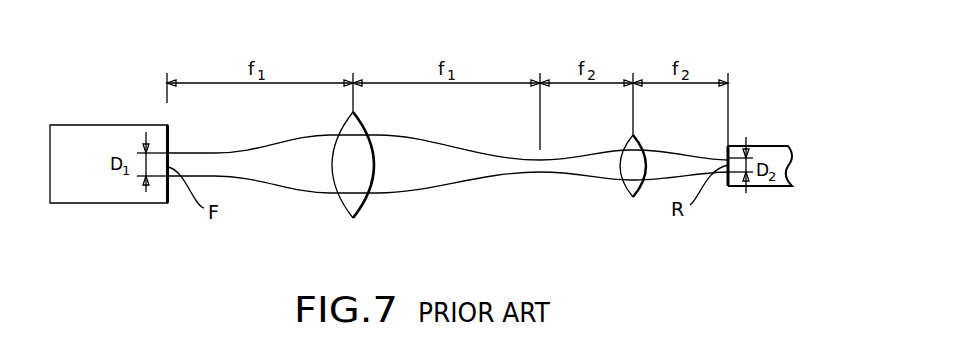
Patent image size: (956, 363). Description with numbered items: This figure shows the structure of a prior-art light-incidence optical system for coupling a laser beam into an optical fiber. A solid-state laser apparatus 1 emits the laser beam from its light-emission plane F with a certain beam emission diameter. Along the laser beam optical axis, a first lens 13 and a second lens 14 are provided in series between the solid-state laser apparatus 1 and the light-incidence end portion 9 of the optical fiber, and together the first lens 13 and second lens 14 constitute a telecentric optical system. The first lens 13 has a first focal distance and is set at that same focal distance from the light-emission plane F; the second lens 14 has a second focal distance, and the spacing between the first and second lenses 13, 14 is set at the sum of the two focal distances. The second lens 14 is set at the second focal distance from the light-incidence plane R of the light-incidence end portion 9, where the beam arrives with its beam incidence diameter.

The solid-state laser apparatus 1 is at (106, 125).
The first lens 13 is at (375, 175).
The second lens 14 is at (621, 185).
The light-incidence end portion 9 is at (728, 150).